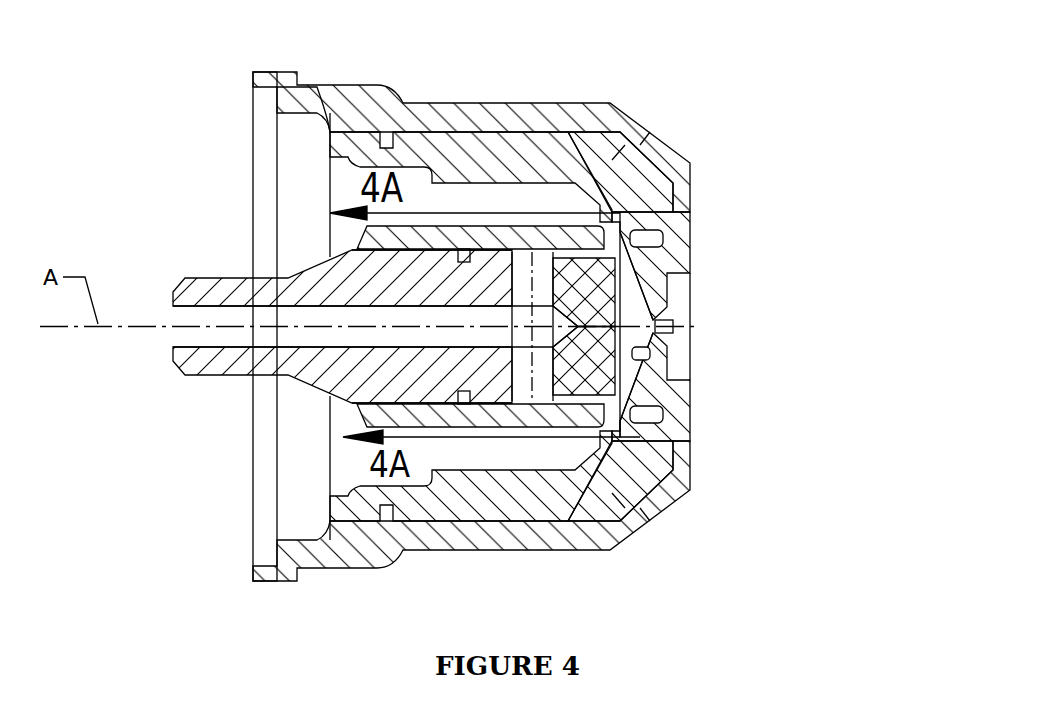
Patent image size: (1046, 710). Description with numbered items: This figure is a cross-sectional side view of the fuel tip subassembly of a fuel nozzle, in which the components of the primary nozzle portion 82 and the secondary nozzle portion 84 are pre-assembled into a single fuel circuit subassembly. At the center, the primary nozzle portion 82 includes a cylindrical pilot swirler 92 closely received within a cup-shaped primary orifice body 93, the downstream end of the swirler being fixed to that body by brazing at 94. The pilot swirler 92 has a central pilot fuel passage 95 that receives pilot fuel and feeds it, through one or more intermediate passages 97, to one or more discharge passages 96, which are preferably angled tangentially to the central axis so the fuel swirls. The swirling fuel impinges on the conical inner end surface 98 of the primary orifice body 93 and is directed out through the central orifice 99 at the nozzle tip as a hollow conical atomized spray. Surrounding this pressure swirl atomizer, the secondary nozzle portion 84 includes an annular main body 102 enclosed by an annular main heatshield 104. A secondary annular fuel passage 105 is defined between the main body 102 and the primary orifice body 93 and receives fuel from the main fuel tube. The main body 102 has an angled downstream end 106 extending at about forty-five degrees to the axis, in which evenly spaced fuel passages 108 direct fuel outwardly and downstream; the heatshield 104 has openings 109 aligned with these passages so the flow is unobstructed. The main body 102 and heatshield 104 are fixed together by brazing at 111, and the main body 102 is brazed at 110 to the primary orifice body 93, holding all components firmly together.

The primary nozzle portion 82 is at (700, 313).
The secondary nozzle portion 84 is at (712, 178).
The pilot swirler 92 is at (195, 362).
The primary orifice body 93 is at (512, 422).
The brazing 94 is at (383, 403).
The central pilot fuel passage 95 is at (218, 320).
The discharge passages 96 is at (607, 380).
The intermediate passages 97 is at (537, 377).
The conical inner end surface 98 is at (648, 352).
The central orifice 99 is at (673, 332).
The main body 102 is at (452, 160).
The main heatshield 104 is at (468, 103).
The secondary annular fuel passage 105 is at (397, 508).
The angled downstream end 106 is at (638, 175).
The fuel passages 108 is at (645, 503).
The openings 109 is at (643, 513).
The brazing 110 is at (620, 428).
The brazing 111 is at (347, 127).